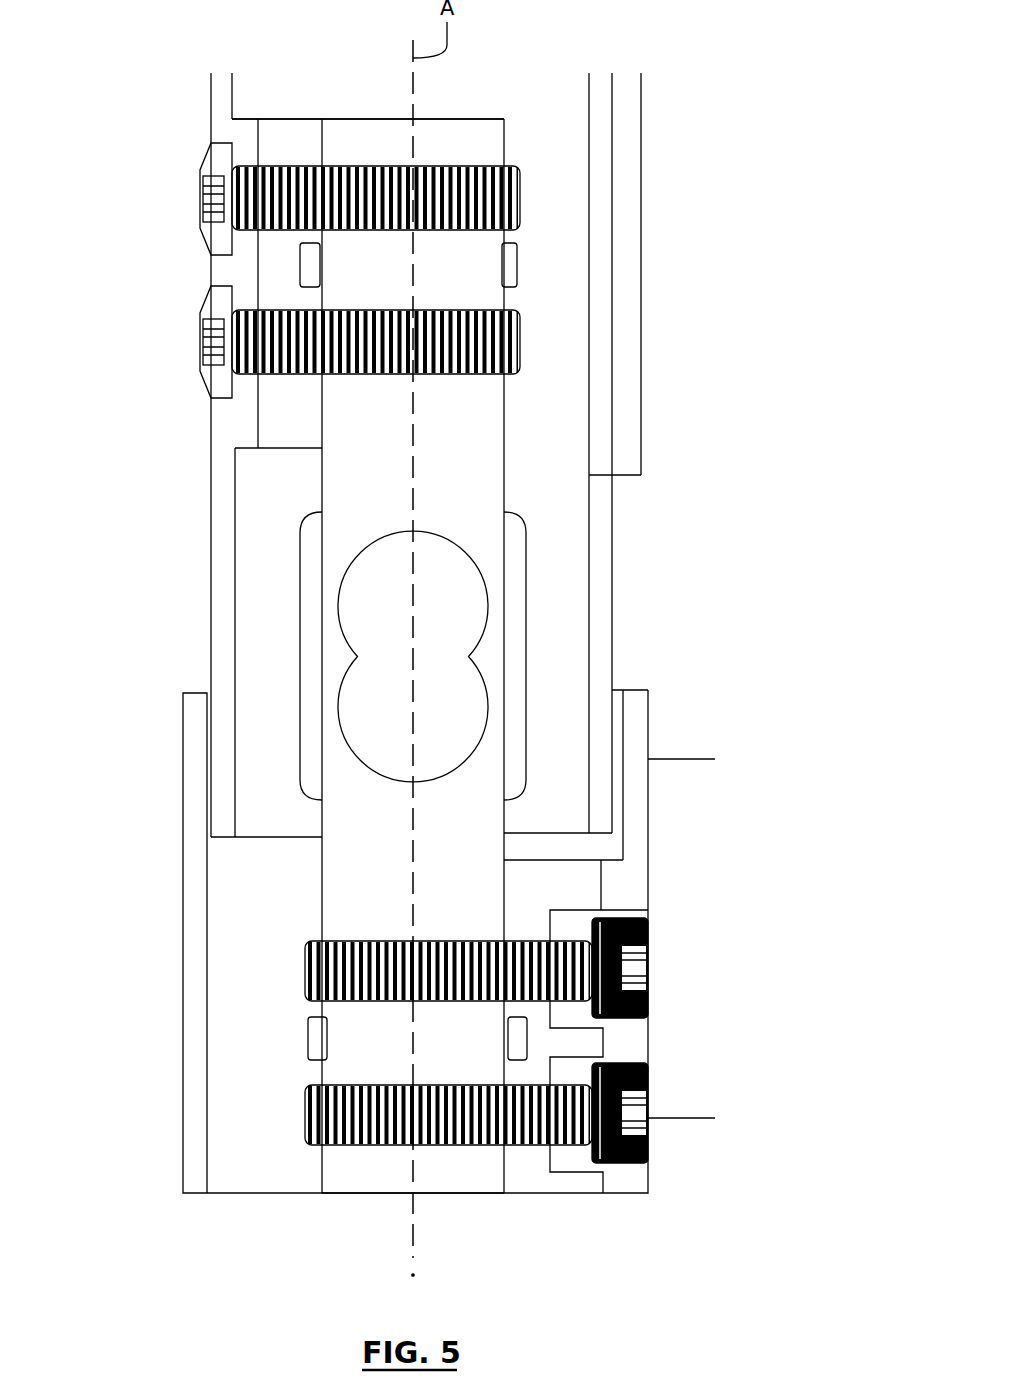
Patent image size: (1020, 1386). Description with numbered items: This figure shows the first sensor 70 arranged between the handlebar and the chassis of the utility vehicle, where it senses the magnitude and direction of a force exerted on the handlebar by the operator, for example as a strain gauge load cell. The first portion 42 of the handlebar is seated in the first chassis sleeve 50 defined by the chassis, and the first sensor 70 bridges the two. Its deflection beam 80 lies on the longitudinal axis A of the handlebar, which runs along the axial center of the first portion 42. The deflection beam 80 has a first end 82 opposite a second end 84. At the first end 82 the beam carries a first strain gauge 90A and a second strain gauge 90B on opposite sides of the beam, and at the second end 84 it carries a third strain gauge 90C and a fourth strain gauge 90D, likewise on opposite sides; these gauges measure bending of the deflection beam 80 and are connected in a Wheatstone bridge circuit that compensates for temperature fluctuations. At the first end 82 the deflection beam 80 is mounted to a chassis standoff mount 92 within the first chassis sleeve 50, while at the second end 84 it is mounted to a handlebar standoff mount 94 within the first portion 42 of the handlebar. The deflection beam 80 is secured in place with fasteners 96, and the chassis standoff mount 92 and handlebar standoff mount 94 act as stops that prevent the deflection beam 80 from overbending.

The first portion 42 is at (209, 590).
The first chassis sleeve 50 is at (190, 983).
The first sensor 70 is at (204, 39).
The deflection beam 80 is at (430, 135).
The first end 82 is at (437, 1193).
The second end 84 is at (346, 119).
The chassis standoff mount 92 is at (522, 1193).
The handlebar standoff mount 94 is at (288, 137).
The fasteners 96 is at (212, 172).
The first strain gauge 90A is at (527, 1040).
The second strain gauge 90B is at (308, 1040).
The third strain gauge 90C is at (517, 265).
The fourth strain gauge 90D is at (300, 264).